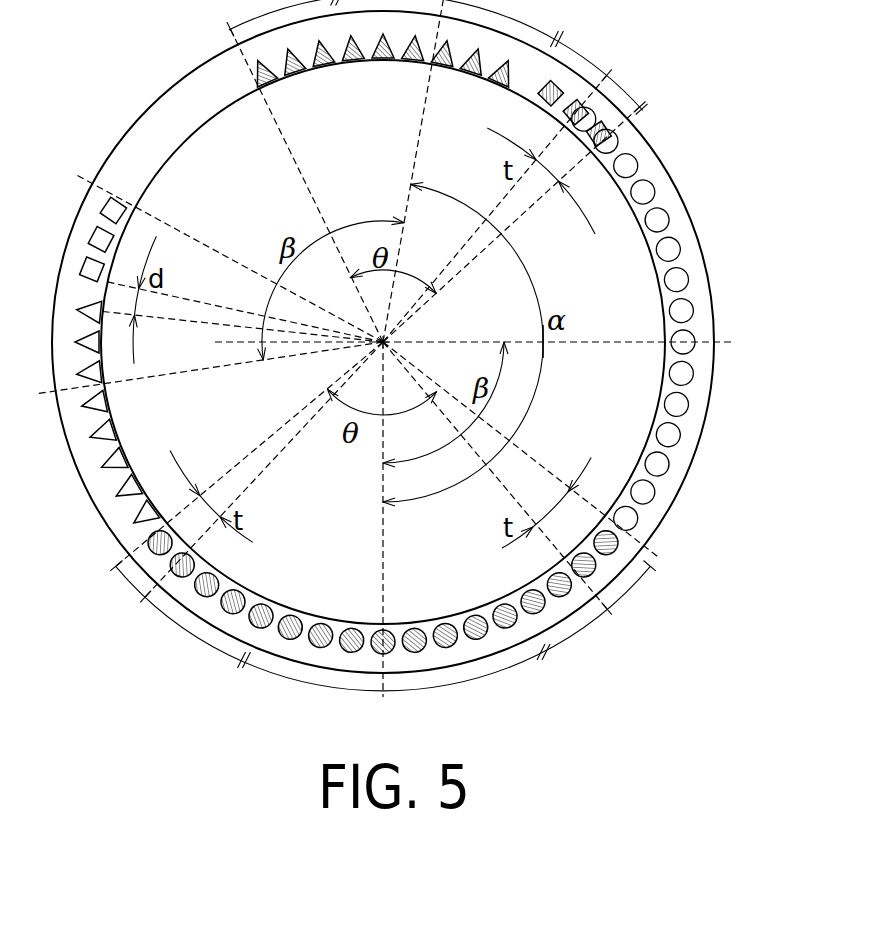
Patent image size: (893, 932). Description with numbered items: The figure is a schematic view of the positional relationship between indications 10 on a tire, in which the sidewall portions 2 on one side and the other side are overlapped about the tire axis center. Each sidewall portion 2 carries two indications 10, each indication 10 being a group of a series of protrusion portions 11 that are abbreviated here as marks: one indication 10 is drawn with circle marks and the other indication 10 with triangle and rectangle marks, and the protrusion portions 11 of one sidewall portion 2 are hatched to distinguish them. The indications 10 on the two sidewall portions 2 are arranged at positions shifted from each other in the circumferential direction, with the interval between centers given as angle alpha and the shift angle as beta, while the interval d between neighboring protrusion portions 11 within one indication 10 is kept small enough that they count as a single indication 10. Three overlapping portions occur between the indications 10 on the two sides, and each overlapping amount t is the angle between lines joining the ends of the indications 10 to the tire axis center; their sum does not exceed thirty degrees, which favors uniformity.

The sidewall portion 2 is at (692, 193).
The indication 10 is at (336, 71).
The protrusion portion 11 is at (321, 63).